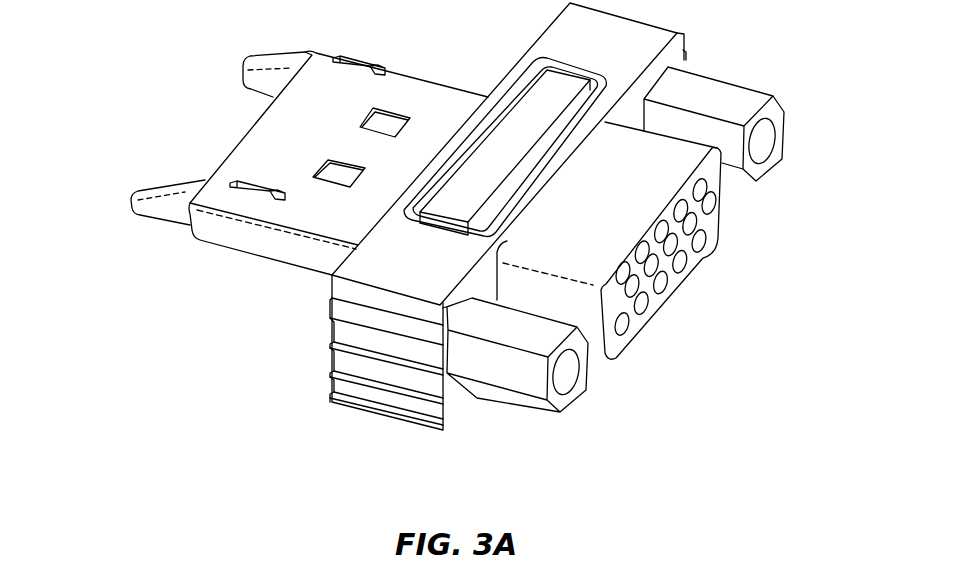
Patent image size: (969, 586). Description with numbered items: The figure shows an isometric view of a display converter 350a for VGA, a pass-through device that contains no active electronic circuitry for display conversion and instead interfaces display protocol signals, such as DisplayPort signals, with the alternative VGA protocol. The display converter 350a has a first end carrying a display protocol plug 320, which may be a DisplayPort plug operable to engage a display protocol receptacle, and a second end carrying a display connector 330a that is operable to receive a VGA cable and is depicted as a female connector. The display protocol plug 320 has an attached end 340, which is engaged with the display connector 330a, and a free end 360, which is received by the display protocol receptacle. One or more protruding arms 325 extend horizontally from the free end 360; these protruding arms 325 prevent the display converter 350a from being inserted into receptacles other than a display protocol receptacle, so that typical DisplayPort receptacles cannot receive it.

The display protocol plug 320 is at (272, 137).
The protruding arms 325 is at (265, 64).
The attached end 340 is at (226, 152).
The free end 360 is at (358, 248).
The display connector 330a is at (647, 177).
The display converter 350a is at (675, 362).